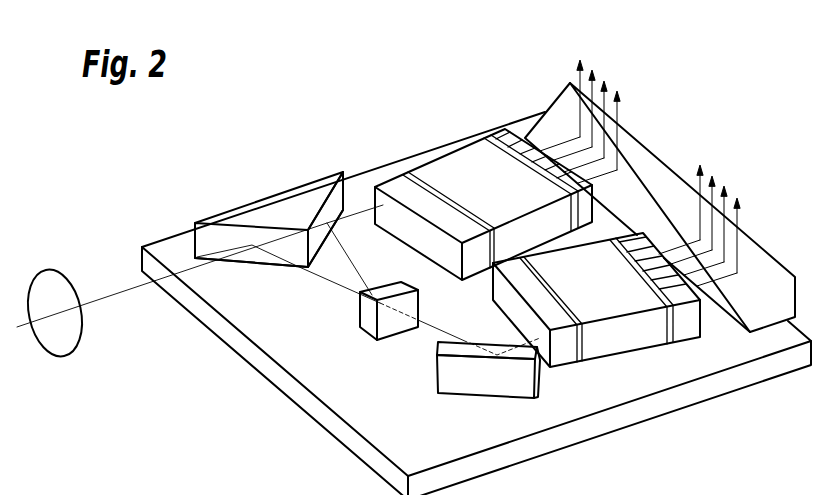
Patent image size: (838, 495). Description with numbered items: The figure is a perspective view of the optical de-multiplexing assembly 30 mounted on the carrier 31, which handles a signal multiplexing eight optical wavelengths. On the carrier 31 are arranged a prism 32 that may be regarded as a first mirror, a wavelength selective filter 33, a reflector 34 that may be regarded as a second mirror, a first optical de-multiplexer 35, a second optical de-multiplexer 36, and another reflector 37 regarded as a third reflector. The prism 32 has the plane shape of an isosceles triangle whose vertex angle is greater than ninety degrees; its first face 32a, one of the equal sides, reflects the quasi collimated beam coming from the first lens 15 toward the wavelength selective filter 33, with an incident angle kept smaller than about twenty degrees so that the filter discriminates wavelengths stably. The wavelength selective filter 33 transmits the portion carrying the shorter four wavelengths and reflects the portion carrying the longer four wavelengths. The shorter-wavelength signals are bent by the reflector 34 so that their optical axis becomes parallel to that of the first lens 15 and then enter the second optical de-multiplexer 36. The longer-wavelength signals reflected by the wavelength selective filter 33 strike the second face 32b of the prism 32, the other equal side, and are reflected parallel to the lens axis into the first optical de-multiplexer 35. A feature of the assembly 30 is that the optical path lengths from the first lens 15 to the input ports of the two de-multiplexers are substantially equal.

The first lens 15 is at (48, 270).
The optical de-multiplexing assembly 30 is at (476, 95).
The carrier 31 is at (543, 443).
The prism 32 is at (268, 202).
The first face 32a is at (210, 237).
The second face 32b is at (335, 205).
The wavelength selective filter 33 is at (368, 327).
The reflector 34 is at (462, 387).
The first optical de-multiplexer 35 is at (393, 183).
The second optical de-multiplexer 36 is at (565, 355).
The another reflector 37 is at (768, 268).